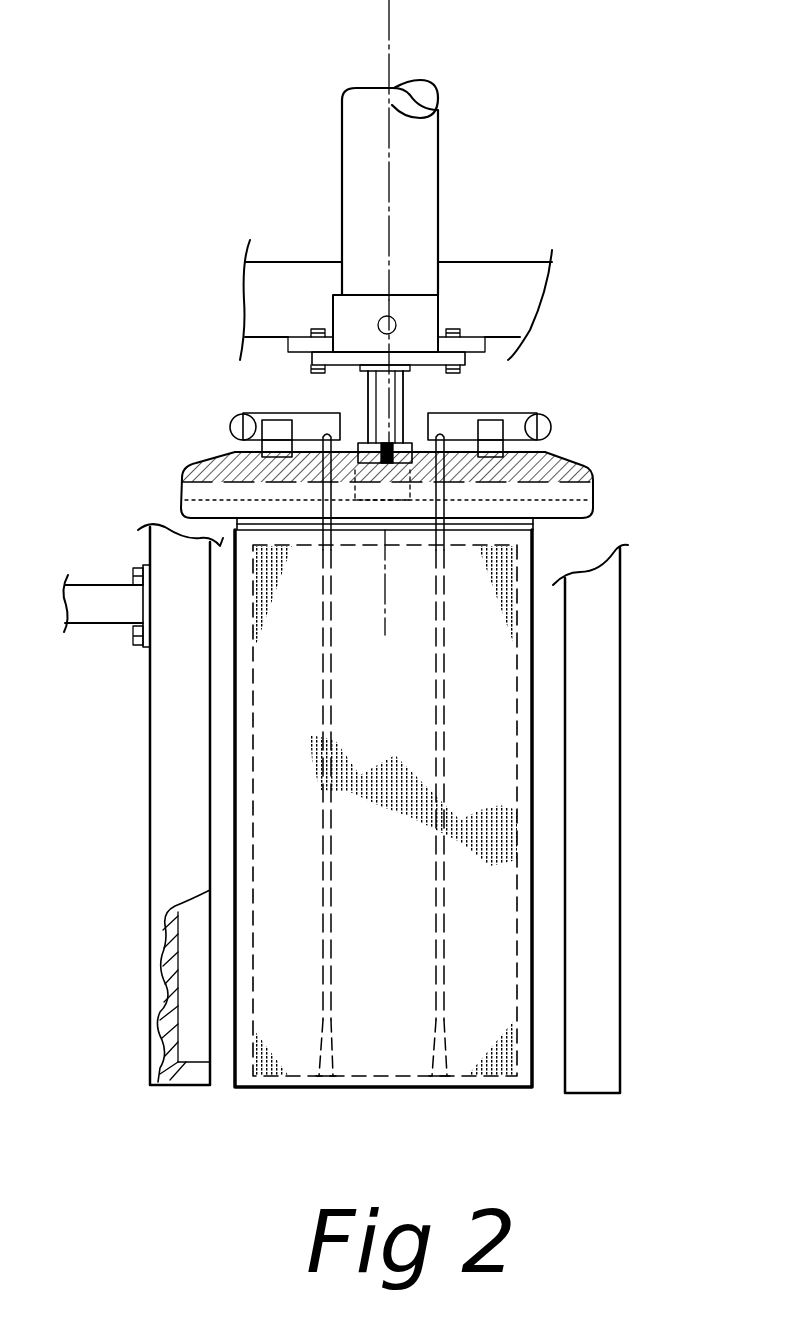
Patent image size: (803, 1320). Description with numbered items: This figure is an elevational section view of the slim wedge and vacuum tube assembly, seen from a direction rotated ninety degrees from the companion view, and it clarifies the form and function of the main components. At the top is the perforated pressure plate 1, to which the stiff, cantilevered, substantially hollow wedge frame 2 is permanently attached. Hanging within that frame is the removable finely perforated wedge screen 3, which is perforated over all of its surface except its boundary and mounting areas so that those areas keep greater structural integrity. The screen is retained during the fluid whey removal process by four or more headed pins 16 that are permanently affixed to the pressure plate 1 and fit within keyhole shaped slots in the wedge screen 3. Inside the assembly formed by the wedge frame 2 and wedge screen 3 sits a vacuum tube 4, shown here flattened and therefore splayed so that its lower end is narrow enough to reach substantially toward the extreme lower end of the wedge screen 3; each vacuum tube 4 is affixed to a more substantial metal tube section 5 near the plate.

The perforated pressure plate 1 is at (557, 512).
The wedge frame 2 is at (228, 1075).
The wedge screen 3 is at (380, 1050).
The vacuum tube 4 is at (460, 1005).
The metal tube section 5 is at (528, 416).
The headed pin 16 is at (490, 540).